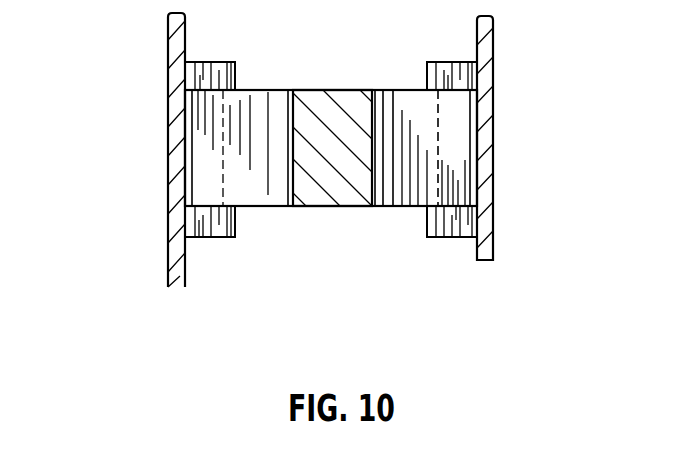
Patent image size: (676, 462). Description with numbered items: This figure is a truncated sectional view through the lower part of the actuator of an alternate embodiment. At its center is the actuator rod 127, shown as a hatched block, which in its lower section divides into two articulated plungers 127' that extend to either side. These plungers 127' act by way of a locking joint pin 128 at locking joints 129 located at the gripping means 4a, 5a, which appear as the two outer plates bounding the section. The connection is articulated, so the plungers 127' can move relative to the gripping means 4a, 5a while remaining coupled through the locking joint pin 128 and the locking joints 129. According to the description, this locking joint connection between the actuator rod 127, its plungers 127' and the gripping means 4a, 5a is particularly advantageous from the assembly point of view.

The gripping means 5a is at (168, 41).
The gripping means 4a is at (497, 55).
The actuator rod 127 is at (327, 194).
The articulated plungers 127' is at (331, 108).
The locking joint pin 128 is at (455, 136).
The locking joints 129 is at (433, 238).